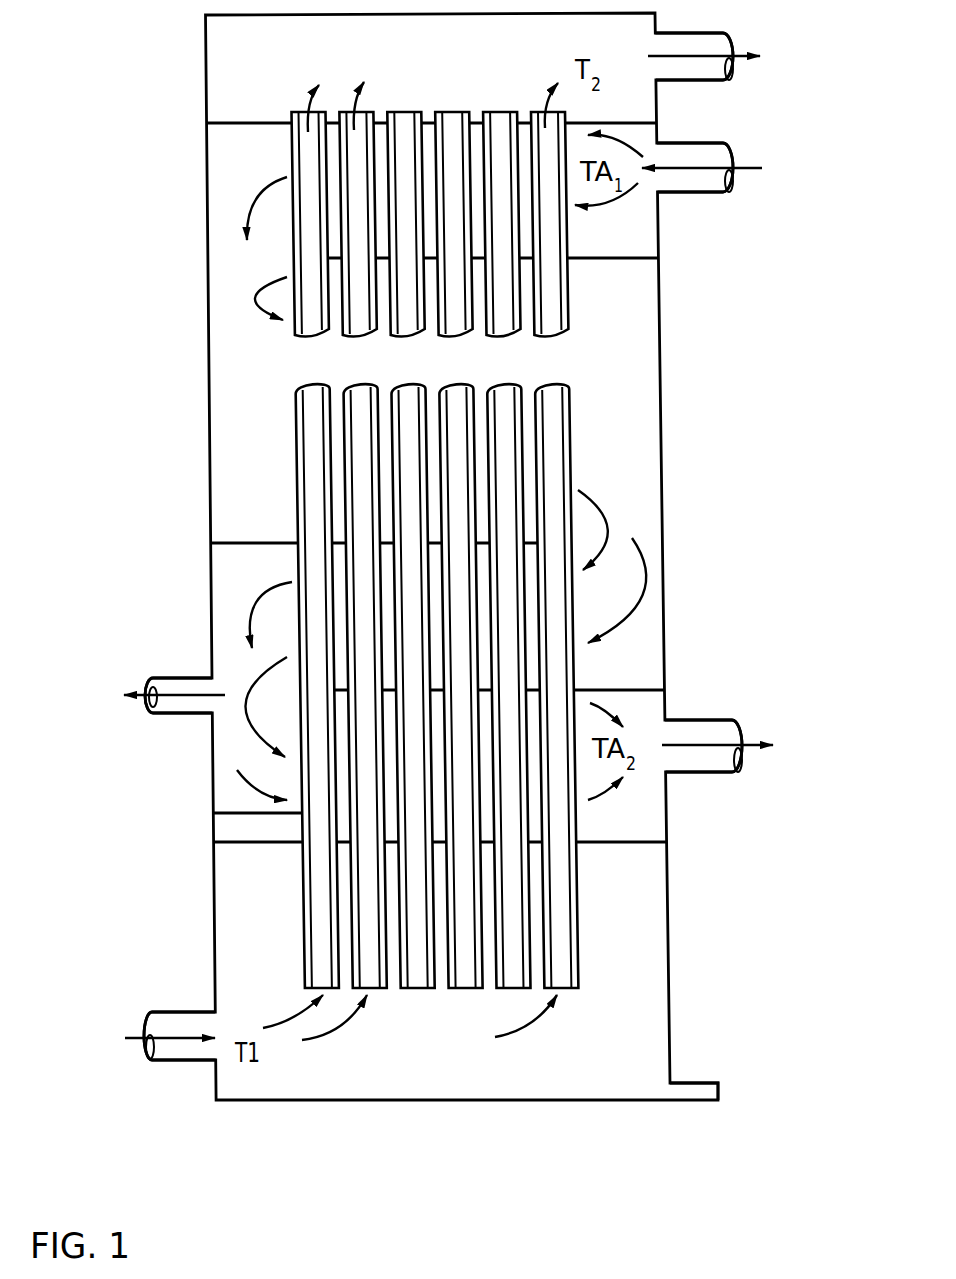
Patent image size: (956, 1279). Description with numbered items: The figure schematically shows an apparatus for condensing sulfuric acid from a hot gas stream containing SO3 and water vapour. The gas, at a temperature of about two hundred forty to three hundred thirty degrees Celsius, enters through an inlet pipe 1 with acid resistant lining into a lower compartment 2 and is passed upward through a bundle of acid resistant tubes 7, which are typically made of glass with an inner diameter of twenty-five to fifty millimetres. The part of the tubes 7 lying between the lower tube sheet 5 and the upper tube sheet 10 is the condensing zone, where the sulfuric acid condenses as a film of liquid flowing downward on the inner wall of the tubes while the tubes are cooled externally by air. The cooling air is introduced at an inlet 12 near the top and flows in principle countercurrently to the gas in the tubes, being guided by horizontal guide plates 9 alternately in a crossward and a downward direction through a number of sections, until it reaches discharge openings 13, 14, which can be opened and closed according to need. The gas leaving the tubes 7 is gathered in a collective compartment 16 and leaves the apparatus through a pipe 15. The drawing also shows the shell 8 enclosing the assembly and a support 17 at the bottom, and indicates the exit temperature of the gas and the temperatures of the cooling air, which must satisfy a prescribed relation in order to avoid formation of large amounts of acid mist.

The inlet pipe 1 is at (182, 1012).
The compartment 2 is at (410, 1031).
The lower tube sheet 5 is at (263, 842).
The acid resistant tubes 7 is at (213, 813).
The shell 8 is at (208, 395).
The horizontal guide plates 9 is at (257, 543).
The upper tube sheet 10 is at (252, 123).
The cooling air inlet 12 is at (685, 193).
The discharge opening 13 is at (692, 720).
The discharge opening 14 is at (175, 678).
The pipe 15 is at (685, 84).
The collective compartment 16 is at (444, 70).
The support foot 17 is at (695, 1083).